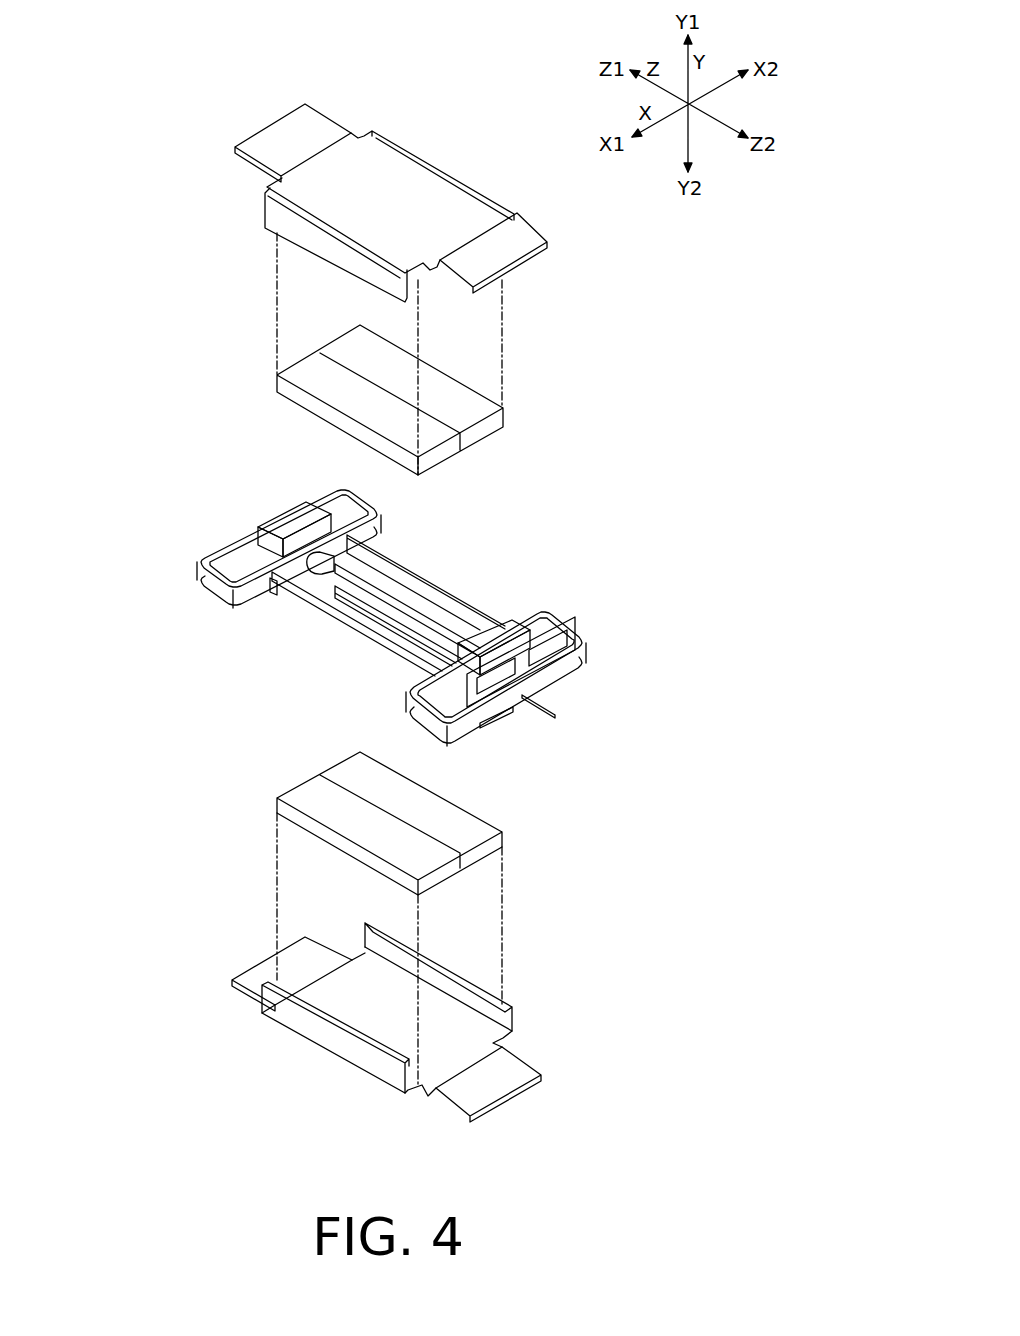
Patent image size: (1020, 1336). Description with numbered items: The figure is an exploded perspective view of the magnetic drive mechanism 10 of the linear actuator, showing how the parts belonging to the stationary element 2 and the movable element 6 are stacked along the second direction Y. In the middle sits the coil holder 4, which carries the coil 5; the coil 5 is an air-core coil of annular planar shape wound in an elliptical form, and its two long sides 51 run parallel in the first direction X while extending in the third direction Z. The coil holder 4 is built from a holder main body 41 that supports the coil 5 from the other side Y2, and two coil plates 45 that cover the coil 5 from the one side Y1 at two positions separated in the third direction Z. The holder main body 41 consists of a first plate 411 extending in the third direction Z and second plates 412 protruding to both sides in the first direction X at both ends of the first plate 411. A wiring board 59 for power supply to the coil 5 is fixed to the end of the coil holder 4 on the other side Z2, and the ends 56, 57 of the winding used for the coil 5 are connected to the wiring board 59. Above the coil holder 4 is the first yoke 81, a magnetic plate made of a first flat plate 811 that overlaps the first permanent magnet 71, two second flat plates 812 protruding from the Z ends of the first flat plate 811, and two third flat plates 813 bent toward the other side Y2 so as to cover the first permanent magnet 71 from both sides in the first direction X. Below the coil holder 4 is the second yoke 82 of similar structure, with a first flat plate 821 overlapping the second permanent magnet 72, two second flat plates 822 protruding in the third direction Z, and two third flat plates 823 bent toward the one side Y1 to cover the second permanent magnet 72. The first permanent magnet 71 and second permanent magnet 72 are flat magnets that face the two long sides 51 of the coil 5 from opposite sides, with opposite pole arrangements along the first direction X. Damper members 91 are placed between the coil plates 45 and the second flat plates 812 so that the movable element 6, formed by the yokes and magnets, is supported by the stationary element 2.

The magnetic drive mechanism 10 is at (163, 225).
The stationary element 2 is at (140, 635).
The coil holder 4 is at (368, 620).
The holder main body 41 is at (215, 598).
The first plate 411 is at (397, 657).
The second plates 412 is at (385, 522).
The coil plates 45 is at (232, 563).
The coil 5 is at (347, 600).
The long sides 51 is at (417, 598).
The damper members 91 is at (279, 512).
The wiring board 59 is at (582, 632).
The end of winding 57 is at (557, 712).
The end of winding 56 is at (533, 700).
The movable element 6 is at (605, 283).
The first yoke 81 is at (533, 260).
The first flat plate 811 is at (410, 178).
The second flat plates 812 is at (318, 126).
The third flat plates 813 is at (318, 252).
The first permanent magnet 71 is at (504, 419).
The second permanent magnet 72 is at (507, 848).
The second yoke 82 is at (468, 1003).
The first flat plate 821 is at (377, 1012).
The second flat plates 822 is at (250, 978).
The third flat plates 823 is at (397, 955).